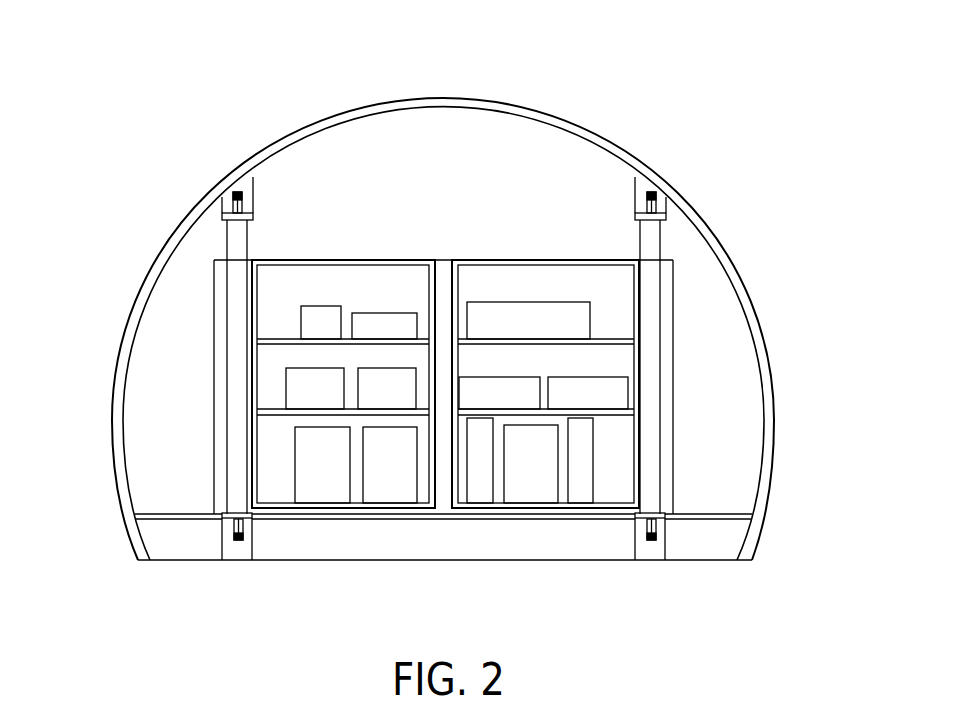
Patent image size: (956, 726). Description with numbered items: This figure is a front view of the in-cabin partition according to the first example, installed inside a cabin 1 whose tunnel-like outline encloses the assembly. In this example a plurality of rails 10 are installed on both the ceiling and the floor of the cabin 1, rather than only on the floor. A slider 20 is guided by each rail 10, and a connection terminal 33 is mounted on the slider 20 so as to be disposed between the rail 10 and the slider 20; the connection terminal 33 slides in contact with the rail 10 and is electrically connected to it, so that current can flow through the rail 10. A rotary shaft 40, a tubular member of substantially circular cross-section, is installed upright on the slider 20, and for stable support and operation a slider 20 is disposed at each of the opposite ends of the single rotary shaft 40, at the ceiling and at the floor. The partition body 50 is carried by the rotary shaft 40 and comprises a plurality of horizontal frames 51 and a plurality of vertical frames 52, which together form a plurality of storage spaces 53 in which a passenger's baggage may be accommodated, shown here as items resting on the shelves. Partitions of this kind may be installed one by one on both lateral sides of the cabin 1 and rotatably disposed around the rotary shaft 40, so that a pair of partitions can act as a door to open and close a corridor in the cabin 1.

The cabin 1 is at (177, 340).
The rail 10 is at (670, 537).
The slider 20 is at (650, 500).
The connection terminal 33 is at (648, 541).
The rotary shaft 40 is at (662, 308).
The partition body 50 is at (568, 260).
The horizontal frame 51 is at (285, 337).
The vertical frame 52 is at (428, 290).
The storage space 53 is at (482, 287).